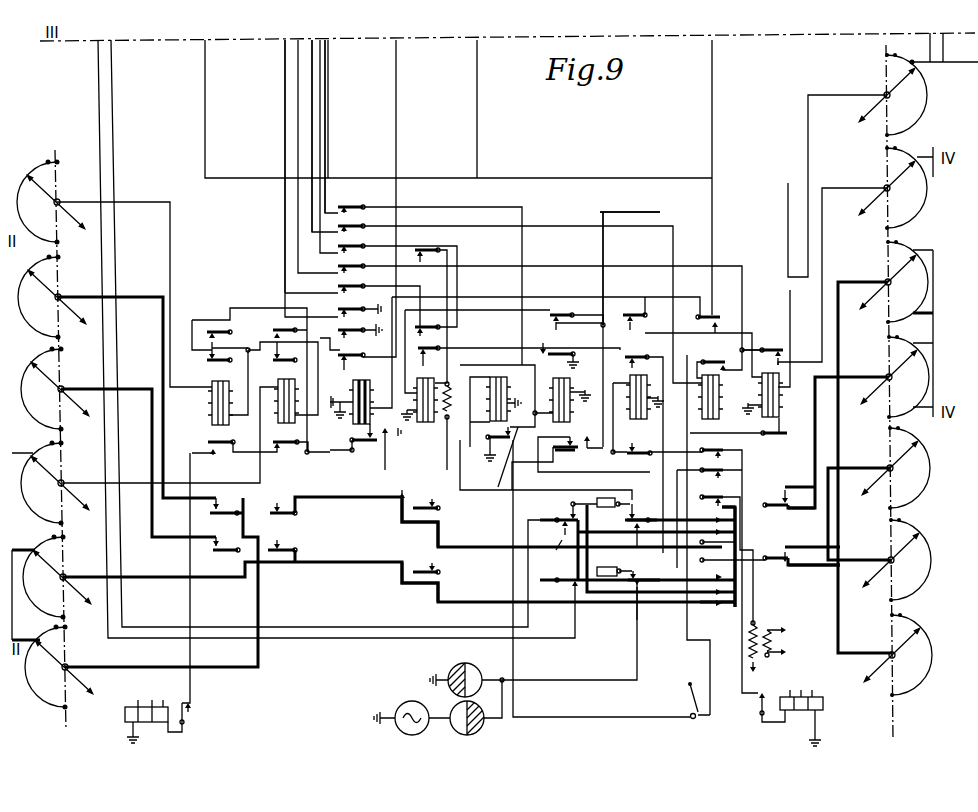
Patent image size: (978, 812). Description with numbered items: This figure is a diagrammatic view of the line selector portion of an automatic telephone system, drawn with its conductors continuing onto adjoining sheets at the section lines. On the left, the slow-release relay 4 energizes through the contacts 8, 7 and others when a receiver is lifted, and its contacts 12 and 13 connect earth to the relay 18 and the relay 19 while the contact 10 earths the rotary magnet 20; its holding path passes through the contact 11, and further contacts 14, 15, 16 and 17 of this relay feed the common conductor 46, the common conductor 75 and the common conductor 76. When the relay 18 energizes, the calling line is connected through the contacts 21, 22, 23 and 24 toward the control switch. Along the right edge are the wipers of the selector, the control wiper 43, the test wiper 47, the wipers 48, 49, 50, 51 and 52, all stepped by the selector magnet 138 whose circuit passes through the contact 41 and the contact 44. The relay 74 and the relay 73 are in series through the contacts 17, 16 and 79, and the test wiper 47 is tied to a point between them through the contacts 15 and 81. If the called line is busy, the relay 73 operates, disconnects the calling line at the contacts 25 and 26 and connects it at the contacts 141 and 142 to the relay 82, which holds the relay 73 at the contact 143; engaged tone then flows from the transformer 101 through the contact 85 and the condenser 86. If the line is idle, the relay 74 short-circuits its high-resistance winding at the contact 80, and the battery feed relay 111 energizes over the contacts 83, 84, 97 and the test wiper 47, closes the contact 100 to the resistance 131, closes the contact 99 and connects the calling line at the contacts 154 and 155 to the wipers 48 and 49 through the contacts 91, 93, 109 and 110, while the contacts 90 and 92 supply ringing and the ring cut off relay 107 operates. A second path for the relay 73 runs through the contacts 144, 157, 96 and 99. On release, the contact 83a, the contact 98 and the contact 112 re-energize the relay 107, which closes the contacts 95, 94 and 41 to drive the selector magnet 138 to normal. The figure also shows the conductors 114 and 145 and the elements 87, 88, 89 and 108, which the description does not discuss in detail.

The relay 4 is at (352, 389).
The contact 7 is at (635, 313).
The contact 8 is at (576, 313).
The contact 10 is at (353, 441).
The contact 11 is at (351, 364).
The contact 12 is at (360, 336).
The contact 13 is at (359, 314).
The contact 14 is at (351, 293).
The contact 15 is at (351, 273).
The contact 16 is at (351, 253).
The contact 17 is at (351, 233).
The relay 18 is at (275, 404).
The relay 19 is at (217, 402).
The rotary magnet 20 is at (158, 714).
The contact 21 is at (255, 540).
The contact 22 is at (253, 503).
The contact 23 is at (409, 582).
The contact 24 is at (409, 518).
The contact 25 is at (559, 591).
The contact 26 is at (559, 540).
The contact 41 is at (764, 707).
The control wiper 43 is at (892, 95).
The contact 44 is at (440, 326).
The common conductor 46 is at (285, 210).
The test wiper 47 is at (892, 188).
The wiper 48 is at (893, 282).
The wiper 49 is at (894, 377).
The wiper 50 is at (895, 468).
The wiper 51 is at (896, 560).
The wiper 52 is at (860, 489).
The relay 73 is at (562, 400).
The relay 74 is at (719, 396).
The common conductor 75 is at (330, 200).
The common conductor 76 is at (312, 198).
The contact 79 is at (500, 463).
The contact 80 is at (726, 366).
The contact 81 is at (771, 348).
The relay 82 is at (498, 409).
The contact 83 is at (587, 450).
The contact 83a is at (563, 463).
The contact 84 is at (542, 344).
The contact 85 is at (722, 472).
The condenser 86 is at (616, 563).
The fuse 87 is at (603, 512).
The contact 88 is at (642, 512).
The contact 89 is at (638, 588).
The contact 90 is at (737, 522).
The contact 91 is at (717, 549).
The contact 92 is at (732, 569).
The contact 93 is at (717, 605).
The contact 94 is at (721, 450).
The contact 95 is at (631, 446).
The contact 96 is at (638, 354).
The contact 97 is at (708, 308).
The contact 98 is at (700, 690).
The contact 99 is at (428, 349).
The contact 100 is at (422, 260).
The transformer 101 is at (767, 642).
The ring cut off relay 107 is at (643, 405).
The relay 108 is at (780, 401).
The contact 109 is at (789, 515).
The contact 110 is at (801, 569).
The battery feed relay 111 is at (420, 409).
The contact 112 is at (722, 498).
The conductor 114 is at (630, 261).
The resistance 131 is at (451, 398).
The selector magnet 138 is at (801, 718).
The contact 141 is at (578, 588).
The contact 142 is at (572, 508).
The contact 143 is at (497, 441).
The contact 144 is at (387, 434).
The junction 145 is at (615, 324).
The contact 154 is at (430, 564).
The contact 155 is at (430, 500).
The contact 157 is at (568, 442).